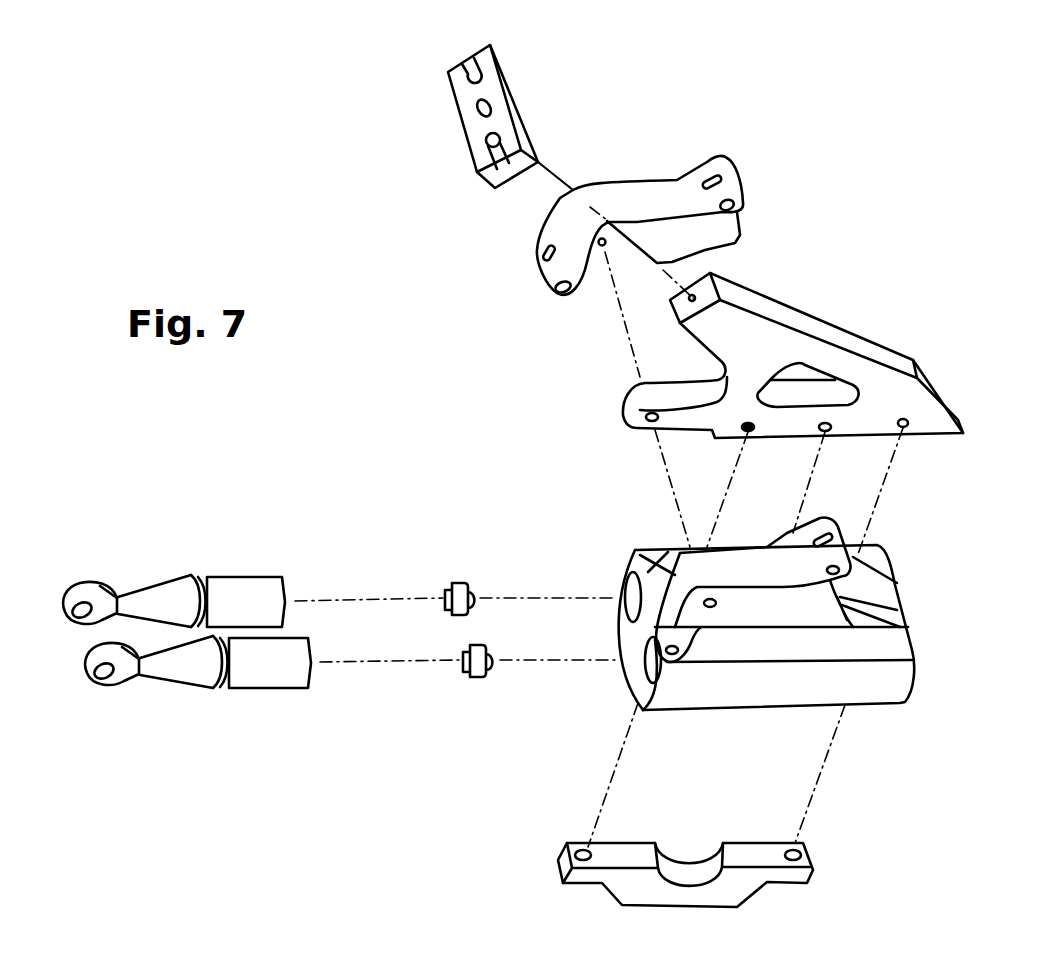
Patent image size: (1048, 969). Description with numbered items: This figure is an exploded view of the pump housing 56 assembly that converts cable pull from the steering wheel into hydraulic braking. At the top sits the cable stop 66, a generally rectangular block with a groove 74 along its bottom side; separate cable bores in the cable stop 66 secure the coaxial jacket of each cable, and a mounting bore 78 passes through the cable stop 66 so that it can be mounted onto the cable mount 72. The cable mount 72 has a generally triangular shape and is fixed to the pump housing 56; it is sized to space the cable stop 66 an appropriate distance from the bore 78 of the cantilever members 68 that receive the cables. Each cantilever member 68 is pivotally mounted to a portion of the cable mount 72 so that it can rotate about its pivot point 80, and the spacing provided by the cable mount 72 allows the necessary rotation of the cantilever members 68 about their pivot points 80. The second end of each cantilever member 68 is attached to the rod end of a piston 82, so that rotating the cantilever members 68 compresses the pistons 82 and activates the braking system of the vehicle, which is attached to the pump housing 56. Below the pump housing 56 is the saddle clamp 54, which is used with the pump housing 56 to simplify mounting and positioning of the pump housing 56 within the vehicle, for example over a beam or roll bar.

The saddle clamp 54 is at (728, 893).
The pump housing 56 is at (893, 640).
The cable stop 66 is at (498, 62).
The cantilever member 68 is at (634, 197).
The cable mount 72 is at (805, 323).
The groove 74 is at (523, 101).
The mounting bore 78 is at (723, 157).
The pivot point 80 is at (602, 246).
The piston 82 is at (242, 577).